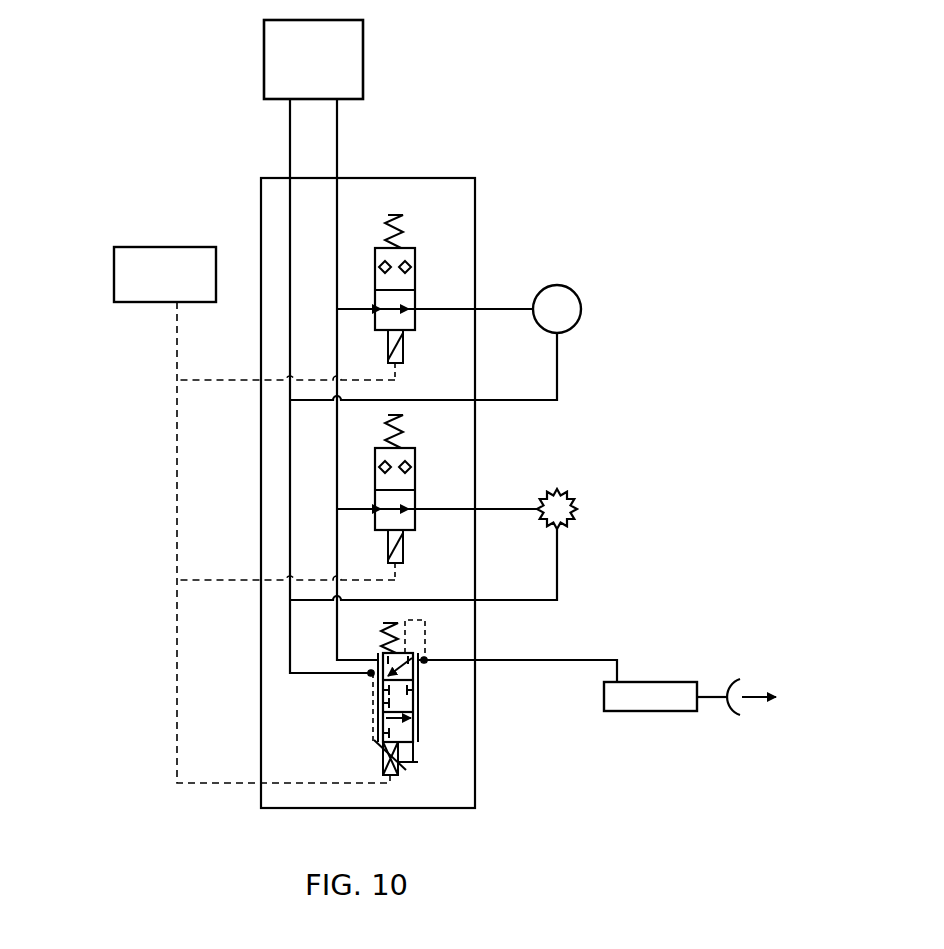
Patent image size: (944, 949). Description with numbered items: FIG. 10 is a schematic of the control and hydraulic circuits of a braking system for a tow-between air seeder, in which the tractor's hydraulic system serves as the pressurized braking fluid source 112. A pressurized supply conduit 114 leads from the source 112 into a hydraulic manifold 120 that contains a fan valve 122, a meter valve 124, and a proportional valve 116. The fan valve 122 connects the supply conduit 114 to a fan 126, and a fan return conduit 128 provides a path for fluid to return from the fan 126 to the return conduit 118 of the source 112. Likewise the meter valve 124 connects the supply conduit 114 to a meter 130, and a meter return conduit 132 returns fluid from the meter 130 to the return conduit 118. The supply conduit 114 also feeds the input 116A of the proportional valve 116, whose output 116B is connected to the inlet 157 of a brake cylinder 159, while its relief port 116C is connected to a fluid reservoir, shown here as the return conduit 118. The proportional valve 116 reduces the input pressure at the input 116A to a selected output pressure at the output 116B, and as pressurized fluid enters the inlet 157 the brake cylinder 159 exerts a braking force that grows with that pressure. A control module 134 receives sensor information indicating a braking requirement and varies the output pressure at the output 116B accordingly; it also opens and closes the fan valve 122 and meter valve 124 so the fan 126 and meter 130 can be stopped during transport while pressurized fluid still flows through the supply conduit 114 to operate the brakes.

The pressurized braking fluid source 112 is at (363, 58).
The pressurized supply conduit 114 is at (337, 127).
The proportional valve 116 is at (420, 718).
The input 116A is at (378, 655).
The output 116B is at (425, 662).
The relief port 116C is at (371, 673).
The return conduit 118 is at (289, 127).
The hydraulic manifold 120 is at (475, 178).
The fan valve 122 is at (415, 248).
The meter valve 124 is at (415, 448).
The fan 126 is at (575, 292).
The fan return conduit 128 is at (557, 360).
The meter 130 is at (572, 497).
The meter return conduit 132 is at (557, 556).
The control module 134 is at (113, 272).
The inlet 157 is at (617, 680).
The brake cylinder 159 is at (657, 711).